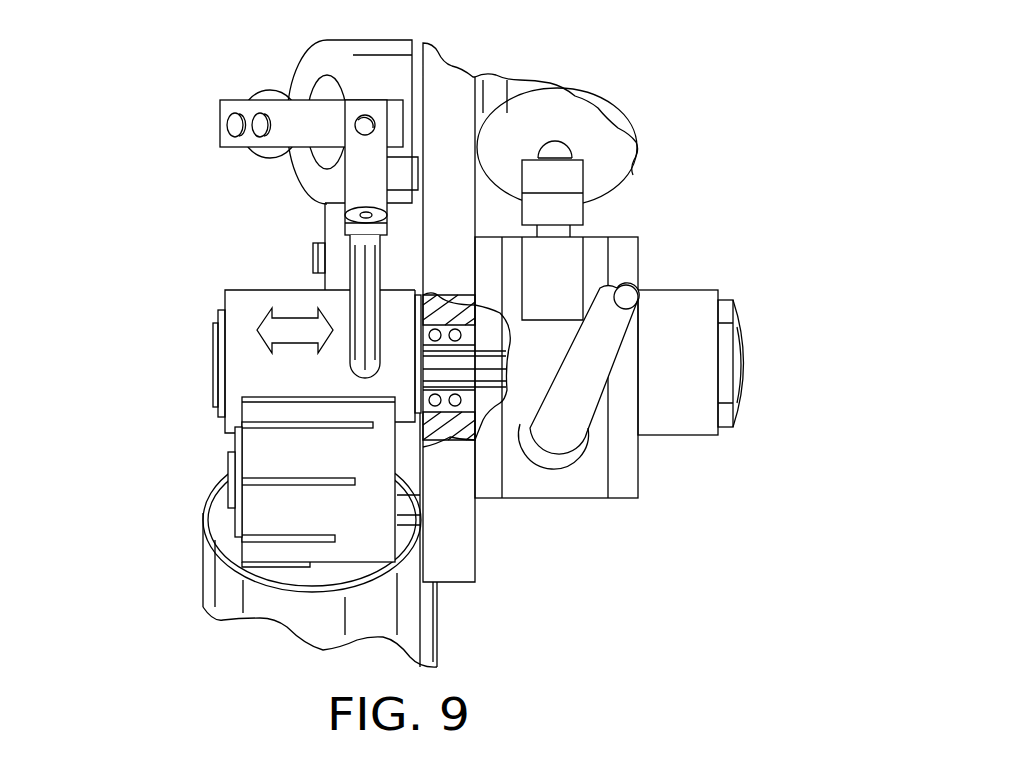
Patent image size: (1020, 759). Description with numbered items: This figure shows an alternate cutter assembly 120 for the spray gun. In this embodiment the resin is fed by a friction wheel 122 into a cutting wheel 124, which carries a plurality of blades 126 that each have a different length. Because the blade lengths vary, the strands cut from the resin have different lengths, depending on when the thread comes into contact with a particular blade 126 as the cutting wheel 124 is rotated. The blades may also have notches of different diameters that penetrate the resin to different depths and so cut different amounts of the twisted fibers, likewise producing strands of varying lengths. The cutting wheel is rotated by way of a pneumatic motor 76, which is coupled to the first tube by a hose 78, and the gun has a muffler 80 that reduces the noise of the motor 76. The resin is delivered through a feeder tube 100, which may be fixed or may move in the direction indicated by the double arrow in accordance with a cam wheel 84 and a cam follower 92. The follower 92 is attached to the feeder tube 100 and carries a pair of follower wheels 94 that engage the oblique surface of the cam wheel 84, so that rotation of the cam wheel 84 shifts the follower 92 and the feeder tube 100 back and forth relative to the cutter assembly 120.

The pneumatic motor 76 is at (590, 475).
The hose 78 is at (605, 337).
The muffler 80 is at (628, 165).
The cam wheel 84 is at (382, 50).
The cam follower 92 is at (290, 130).
The follower wheels 94 is at (265, 92).
The feeder tube 100 is at (355, 283).
The alternate cutter assembly 120 is at (176, 356).
The friction wheel 122 is at (235, 380).
The cutting wheel 124 is at (262, 508).
The blades 126 is at (268, 540).